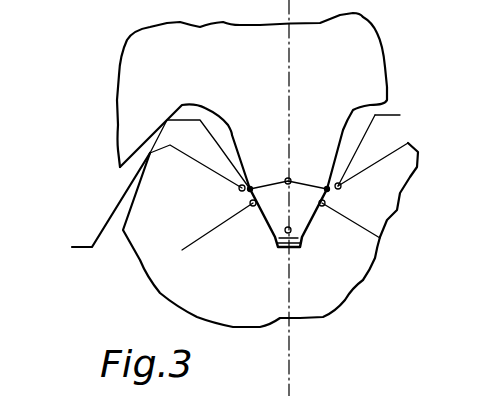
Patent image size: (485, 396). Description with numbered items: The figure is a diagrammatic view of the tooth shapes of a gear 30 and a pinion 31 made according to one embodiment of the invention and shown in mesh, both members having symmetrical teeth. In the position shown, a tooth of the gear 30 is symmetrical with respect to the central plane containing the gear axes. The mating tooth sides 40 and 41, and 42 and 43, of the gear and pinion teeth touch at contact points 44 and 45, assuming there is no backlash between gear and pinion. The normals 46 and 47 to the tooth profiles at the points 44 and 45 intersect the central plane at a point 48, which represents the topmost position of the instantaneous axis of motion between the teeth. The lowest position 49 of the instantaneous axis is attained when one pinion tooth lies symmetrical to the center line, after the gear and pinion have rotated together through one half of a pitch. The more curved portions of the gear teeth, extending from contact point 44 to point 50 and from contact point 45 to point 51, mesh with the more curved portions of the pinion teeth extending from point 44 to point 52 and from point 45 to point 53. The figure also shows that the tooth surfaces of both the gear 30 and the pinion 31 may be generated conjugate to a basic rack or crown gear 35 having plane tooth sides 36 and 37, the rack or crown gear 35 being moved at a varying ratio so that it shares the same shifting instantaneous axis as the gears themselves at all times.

The gear 30 is at (372, 48).
The pinion 31 is at (352, 274).
The basic rack or crown gear 35 is at (400, 115).
The plane tooth side 36 is at (361, 143).
The plane tooth side 37 is at (216, 143).
The tooth side 40 is at (340, 141).
The tooth side 41 is at (369, 163).
The tooth side 42 is at (237, 150).
The tooth side 43 is at (210, 169).
The contact point 44 is at (322, 206).
The contact point 45 is at (252, 206).
The normal 46 is at (374, 234).
The normal 47 is at (211, 234).
The topmost position of instantaneous axis 48 is at (289, 178).
The lowest position of instantaneous axis 49 is at (289, 227).
The end point of curved gear tooth portion 50 is at (326, 187).
The end point of curved gear tooth portion 51 is at (250, 187).
The end point of curved pinion tooth portion 52 is at (340, 188).
The end point of curved pinion tooth portion 53 is at (240, 190).